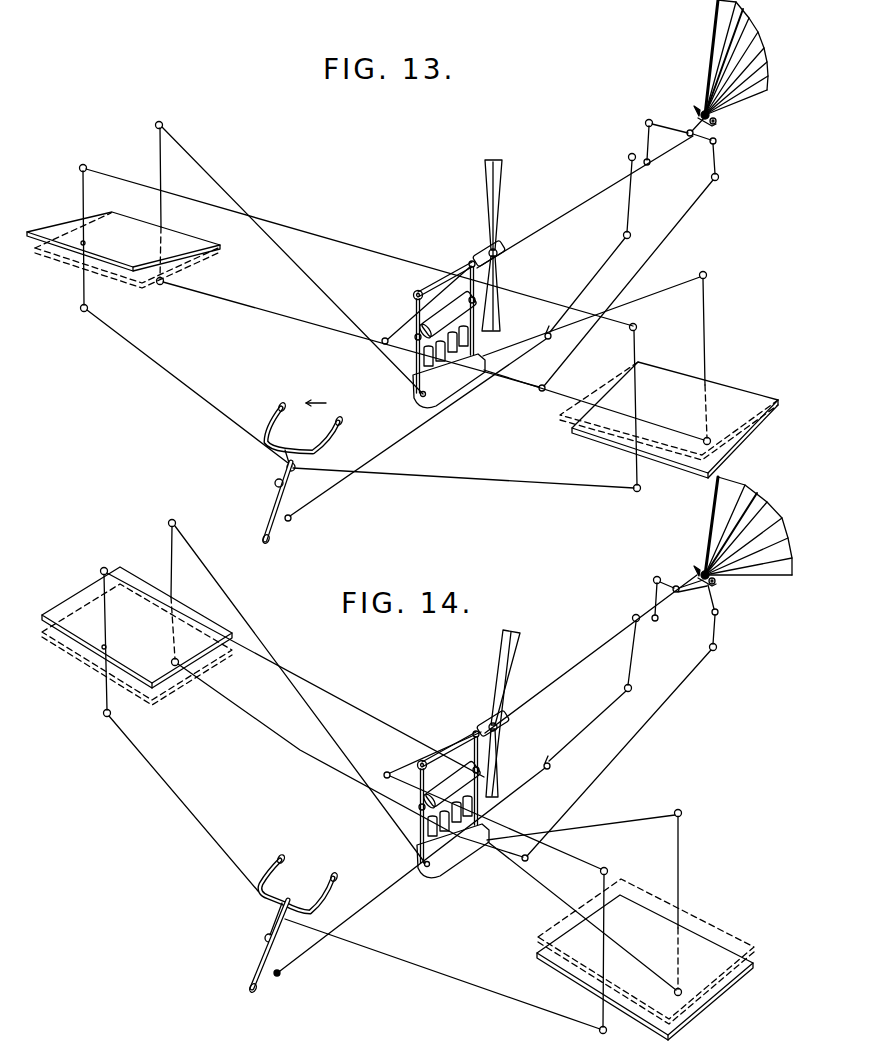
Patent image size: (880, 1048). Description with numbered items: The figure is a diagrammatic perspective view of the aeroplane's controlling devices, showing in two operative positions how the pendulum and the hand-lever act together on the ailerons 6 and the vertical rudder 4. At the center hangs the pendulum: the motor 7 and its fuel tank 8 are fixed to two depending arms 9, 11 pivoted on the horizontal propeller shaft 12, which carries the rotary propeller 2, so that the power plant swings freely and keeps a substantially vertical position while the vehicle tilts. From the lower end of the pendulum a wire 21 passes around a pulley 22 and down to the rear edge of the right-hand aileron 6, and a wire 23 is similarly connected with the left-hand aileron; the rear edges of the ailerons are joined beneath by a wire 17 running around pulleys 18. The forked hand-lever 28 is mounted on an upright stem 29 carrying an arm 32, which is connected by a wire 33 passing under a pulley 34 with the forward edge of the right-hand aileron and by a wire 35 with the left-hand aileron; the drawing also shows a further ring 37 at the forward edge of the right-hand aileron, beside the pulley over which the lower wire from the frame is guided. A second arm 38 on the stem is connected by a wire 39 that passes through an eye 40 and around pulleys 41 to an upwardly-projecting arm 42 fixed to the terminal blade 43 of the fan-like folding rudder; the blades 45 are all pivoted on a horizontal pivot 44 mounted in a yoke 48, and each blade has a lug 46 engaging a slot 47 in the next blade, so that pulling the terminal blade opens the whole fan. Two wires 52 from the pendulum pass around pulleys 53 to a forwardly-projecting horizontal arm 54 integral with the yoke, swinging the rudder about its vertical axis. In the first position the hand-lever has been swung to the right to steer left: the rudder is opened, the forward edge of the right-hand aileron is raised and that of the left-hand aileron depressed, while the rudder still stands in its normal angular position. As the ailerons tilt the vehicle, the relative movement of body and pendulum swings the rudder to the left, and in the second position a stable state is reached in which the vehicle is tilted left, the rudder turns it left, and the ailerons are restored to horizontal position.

In FIG. 13, the rotary propeller 2 is at (499, 178).
In FIG. 14, the rotary propeller 2 is at (518, 628).
In FIG. 13, the vertical rudder 4 is at (752, 85).
In FIG. 14, the vertical rudder 4 is at (770, 570).
In FIG. 13, the aileron 6 is at (402, 345).
In FIG. 14, the aileron 6 is at (398, 803).
In FIG. 13, the motor 7 is at (412, 393).
In FIG. 14, the motor 7 is at (428, 874).
In FIG. 13, the fuel tank 8 is at (448, 328).
In FIG. 14, the fuel tank 8 is at (452, 798).
In FIG. 13, the depending arm 9 is at (413, 297).
In FIG. 14, the depending arm 9 is at (420, 803).
In FIG. 13, the depending arm 11 is at (475, 340).
In FIG. 14, the depending arm 11 is at (479, 756).
In FIG. 13, the propeller shaft 12 is at (462, 265).
In FIG. 14, the propeller shaft 12 is at (460, 740).
In FIG. 13, the wire 17 is at (285, 320).
In FIG. 14, the wire 17 is at (285, 737).
In FIG. 13, the pulley 18 is at (161, 285).
In FIG. 14, the pulley 18 is at (180, 665).
In FIG. 13, the wire 21 is at (313, 283).
In FIG. 14, the wire 21 is at (300, 694).
In FIG. 13, the pulley 22 is at (163, 124).
In FIG. 14, the pulley 22 is at (176, 521).
In FIG. 13, the wire 23 is at (684, 282).
In FIG. 14, the wire 23 is at (645, 817).
In FIG. 13, the forked hand-lever 28 is at (274, 414).
In FIG. 14, the forked hand-lever 28 is at (277, 872).
In FIG. 13, the upright stem 29 is at (270, 503).
In FIG. 14, the upright stem 29 is at (262, 949).
In FIG. 13, the arm 32 is at (293, 470).
In FIG. 14, the arm 32 is at (275, 937).
In FIG. 13, the wire 33 is at (146, 356).
In FIG. 14, the wire 33 is at (207, 832).
In FIG. 13, the pulley 34 is at (80, 308).
In FIG. 14, the pulley 34 is at (103, 712).
In FIG. 13, the wire 35 is at (559, 484).
In FIG. 14, the wire 35 is at (440, 975).
In FIG. 13, the wing ring 37 is at (85, 165).
In FIG. 14, the wing ring 37 is at (105, 568).
In FIG. 13, the arm 38 is at (277, 532).
In FIG. 14, the arm 38 is at (256, 991).
In FIG. 13, the wire 39 is at (406, 438).
In FIG. 14, the wire 39 is at (380, 898).
In FIG. 13, the eye 40 is at (292, 521).
In FIG. 14, the eye 40 is at (281, 976).
In FIG. 13, the pulley 41 is at (548, 333).
In FIG. 14, the pulley 41 is at (632, 617).
In FIG. 13, the upwardly-projecting arm 42 is at (693, 107).
In FIG. 14, the upwardly-projecting arm 42 is at (697, 570).
In FIG. 13, the blade 43 is at (712, 47).
In FIG. 14, the blade 43 is at (716, 524).
In FIG. 13, the horizontal pivot 44 is at (716, 122).
In FIG. 13, the blade 45 is at (752, 36).
In FIG. 14, the blade 45 is at (770, 513).
In FIG. 13, the lug 46 is at (717, 82).
In FIG. 14, the lug 46 is at (723, 553).
In FIG. 14, the slot 47 is at (716, 582).
In FIG. 13, the yoke 48 is at (715, 128).
In FIG. 14, the yoke 48 is at (713, 587).
In FIG. 13, the wire 52 is at (607, 196).
In FIG. 14, the wire 52 is at (590, 797).
In FIG. 13, the pulley 53 is at (725, 177).
In FIG. 14, the pulley 53 is at (386, 772).
In FIG. 13, the horizontal arm 54 is at (690, 137).
In FIG. 14, the horizontal arm 54 is at (677, 593).